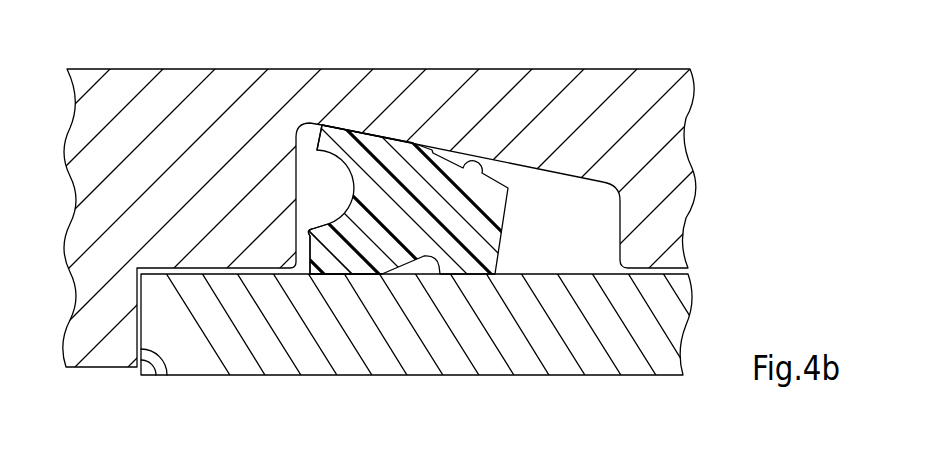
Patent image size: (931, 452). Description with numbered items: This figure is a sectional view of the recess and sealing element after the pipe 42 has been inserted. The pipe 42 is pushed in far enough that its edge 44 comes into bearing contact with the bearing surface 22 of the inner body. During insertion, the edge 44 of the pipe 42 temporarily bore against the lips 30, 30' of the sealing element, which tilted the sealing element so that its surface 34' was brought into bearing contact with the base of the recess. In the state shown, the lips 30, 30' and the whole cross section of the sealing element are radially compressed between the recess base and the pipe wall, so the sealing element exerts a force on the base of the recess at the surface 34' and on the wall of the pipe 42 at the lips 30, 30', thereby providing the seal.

The bearing surface 22 is at (133, 335).
The pipe 42 is at (615, 353).
The edge 44 is at (150, 347).
The lip 30 is at (372, 277).
The lip 30' is at (277, 277).
The surface 34' is at (365, 80).